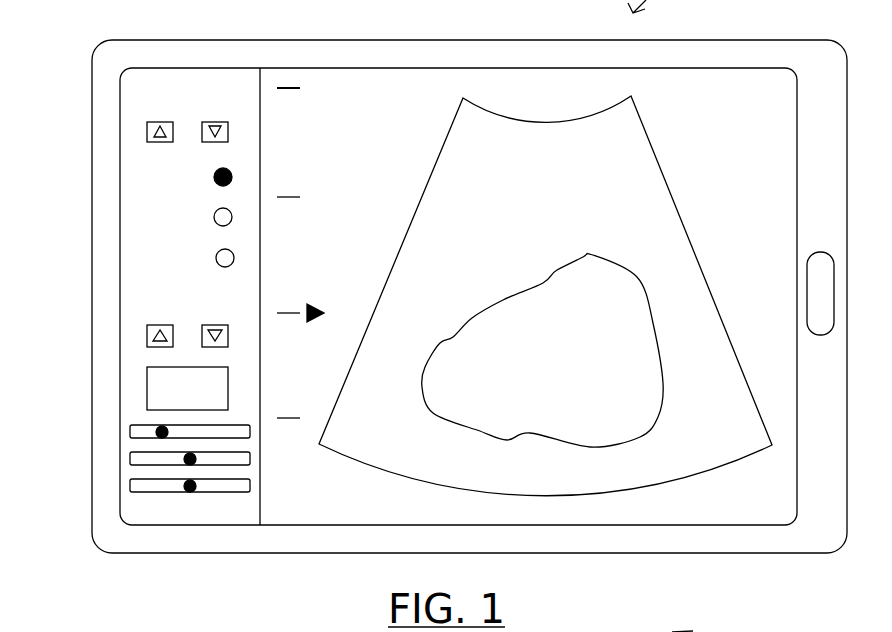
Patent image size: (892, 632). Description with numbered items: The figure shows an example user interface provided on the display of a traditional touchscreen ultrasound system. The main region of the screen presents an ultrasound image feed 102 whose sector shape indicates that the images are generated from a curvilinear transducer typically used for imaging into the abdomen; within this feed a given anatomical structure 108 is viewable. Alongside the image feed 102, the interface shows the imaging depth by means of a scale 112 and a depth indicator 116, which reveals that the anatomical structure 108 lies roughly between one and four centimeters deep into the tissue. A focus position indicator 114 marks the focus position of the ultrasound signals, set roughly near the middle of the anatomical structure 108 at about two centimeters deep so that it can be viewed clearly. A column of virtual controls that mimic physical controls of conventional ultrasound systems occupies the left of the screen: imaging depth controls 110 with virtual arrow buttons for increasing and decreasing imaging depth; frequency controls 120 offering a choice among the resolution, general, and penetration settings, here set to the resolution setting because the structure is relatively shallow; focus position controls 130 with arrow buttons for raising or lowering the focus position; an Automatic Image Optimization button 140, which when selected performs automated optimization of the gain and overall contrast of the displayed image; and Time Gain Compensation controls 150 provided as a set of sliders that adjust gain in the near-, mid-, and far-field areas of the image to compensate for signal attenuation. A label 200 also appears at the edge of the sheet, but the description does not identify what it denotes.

The ultrasound image feed 102 is at (650, 143).
The anatomical structure 108 is at (612, 377).
The imaging depth controls 110 is at (147, 128).
The scale 112 is at (298, 170).
The focus position indicator 114 is at (304, 290).
The depth indicator 116 is at (296, 503).
The frequency controls 120 is at (153, 200).
The focus position controls 130 is at (147, 318).
The Automatic Image Optimization (AIO) button 140 is at (147, 388).
The Time Gain Compensation (TGC) controls 150 is at (130, 458).
The method / system label 200 is at (708, 621).